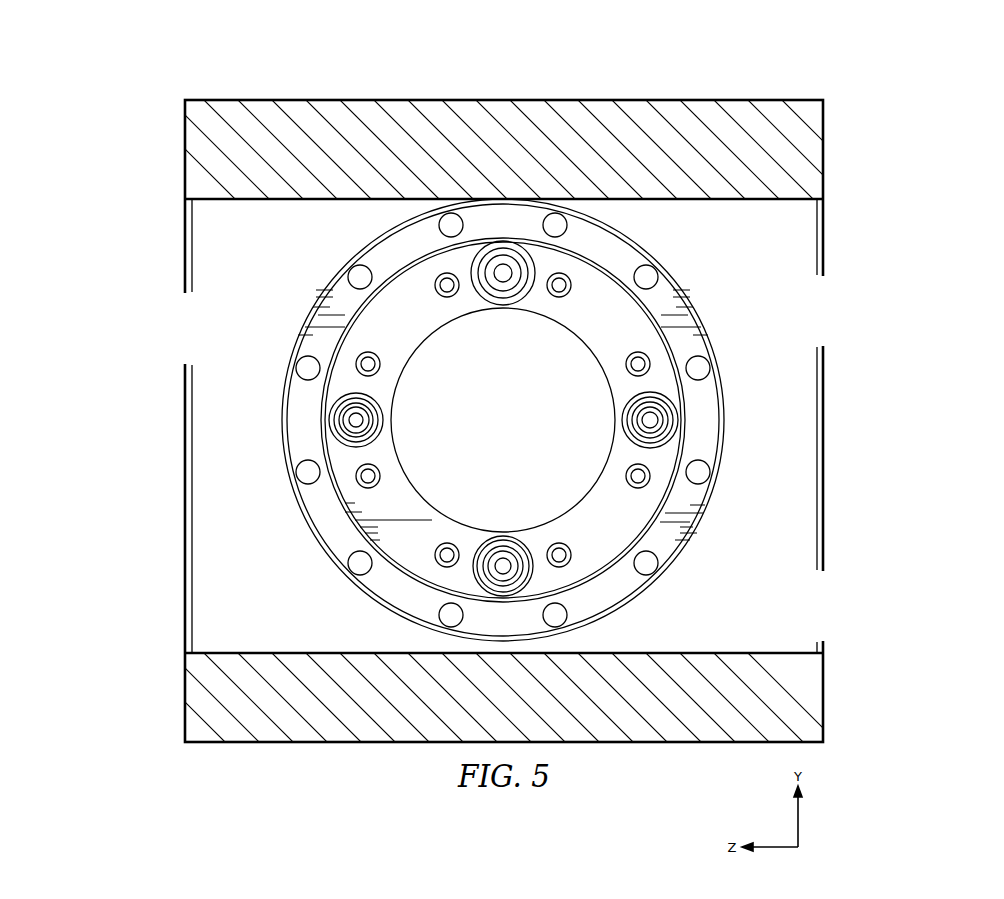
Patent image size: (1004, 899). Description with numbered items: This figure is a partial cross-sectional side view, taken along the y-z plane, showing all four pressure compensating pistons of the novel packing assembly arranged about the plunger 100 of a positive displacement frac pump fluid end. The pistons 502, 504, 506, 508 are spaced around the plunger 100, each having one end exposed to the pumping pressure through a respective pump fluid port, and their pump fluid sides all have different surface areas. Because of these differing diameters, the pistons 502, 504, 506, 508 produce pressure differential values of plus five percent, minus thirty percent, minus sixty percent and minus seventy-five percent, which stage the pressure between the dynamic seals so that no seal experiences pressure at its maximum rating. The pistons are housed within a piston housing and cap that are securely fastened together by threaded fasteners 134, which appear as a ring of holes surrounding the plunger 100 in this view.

The plunger 100 is at (515, 421).
The threaded fasteners 134 is at (360, 353).
The piston 502 is at (510, 268).
The piston 504 is at (677, 404).
The piston 506 is at (533, 572).
The piston 508 is at (332, 416).